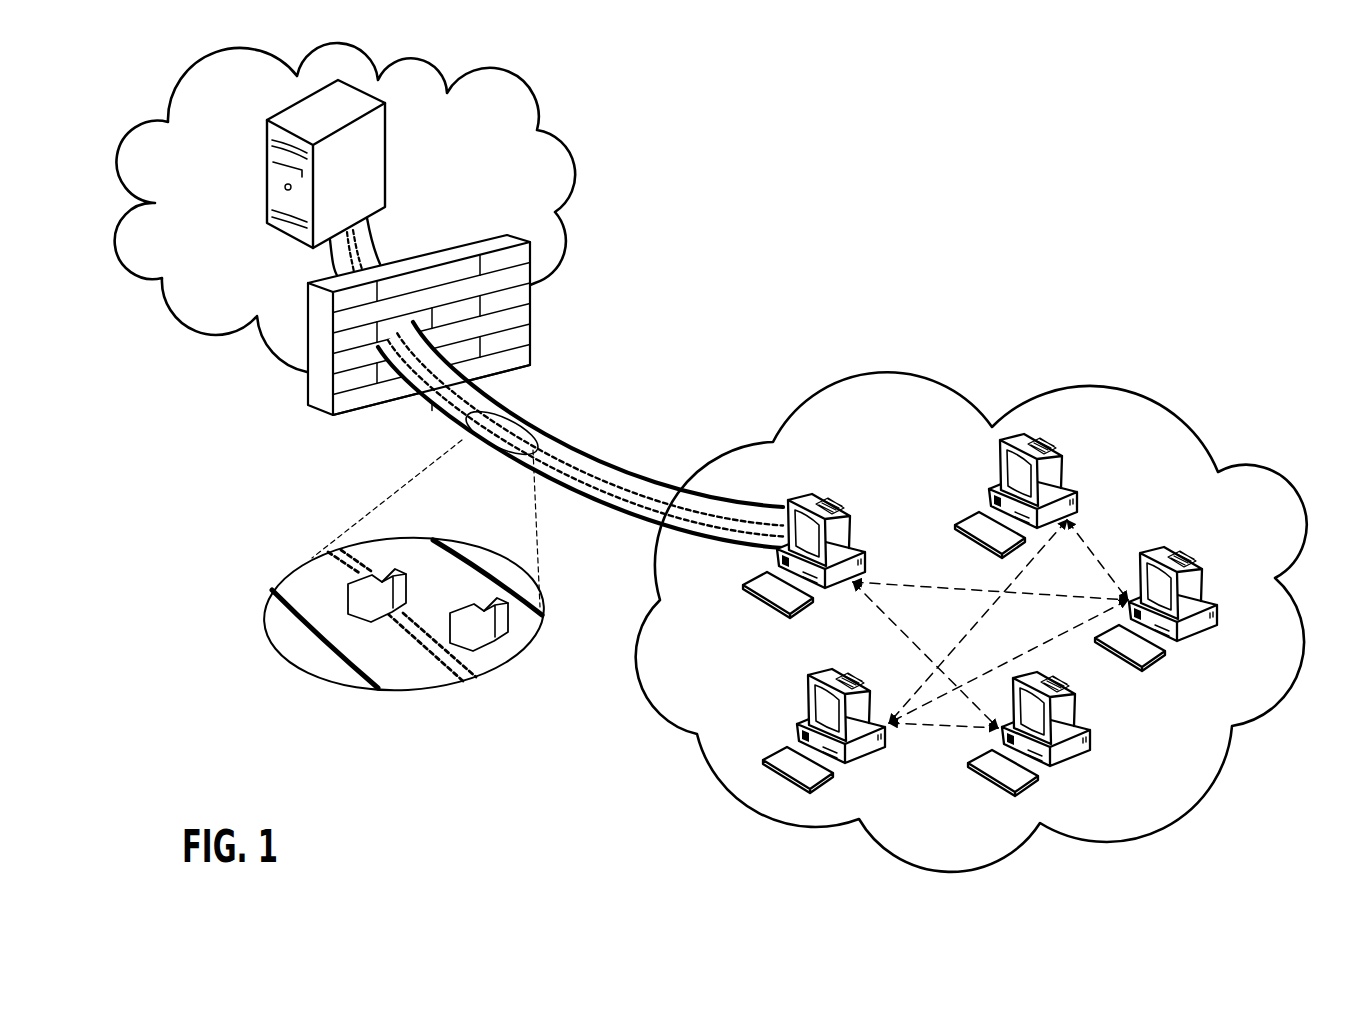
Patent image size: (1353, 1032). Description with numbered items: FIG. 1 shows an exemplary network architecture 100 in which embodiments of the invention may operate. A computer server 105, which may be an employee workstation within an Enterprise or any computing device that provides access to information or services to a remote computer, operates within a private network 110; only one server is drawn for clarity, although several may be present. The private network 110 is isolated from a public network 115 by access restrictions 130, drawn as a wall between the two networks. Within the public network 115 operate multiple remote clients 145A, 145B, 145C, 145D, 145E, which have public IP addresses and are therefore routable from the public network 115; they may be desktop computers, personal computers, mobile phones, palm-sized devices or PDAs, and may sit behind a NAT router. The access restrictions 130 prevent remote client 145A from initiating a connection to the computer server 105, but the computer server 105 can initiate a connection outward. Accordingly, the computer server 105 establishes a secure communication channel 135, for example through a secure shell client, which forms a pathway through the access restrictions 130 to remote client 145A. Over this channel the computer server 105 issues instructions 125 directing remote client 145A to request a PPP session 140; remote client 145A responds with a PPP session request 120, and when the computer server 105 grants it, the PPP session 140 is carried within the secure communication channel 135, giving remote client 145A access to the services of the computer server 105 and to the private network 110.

The network architecture 100 is at (1092, 110).
The computer server 105 is at (330, 180).
The private network 110 is at (567, 152).
The public network 115 is at (857, 368).
The PPP session request 120 is at (387, 612).
The instructions 125 is at (489, 641).
The access restrictions 130 is at (313, 395).
The secure communication channel 135 is at (590, 447).
The PPP session 140 is at (623, 490).
The remote client 145A is at (838, 506).
The remote client 145B is at (1064, 457).
The remote client 145C is at (1167, 552).
The remote client 145D is at (1078, 723).
The remote client 145E is at (819, 674).